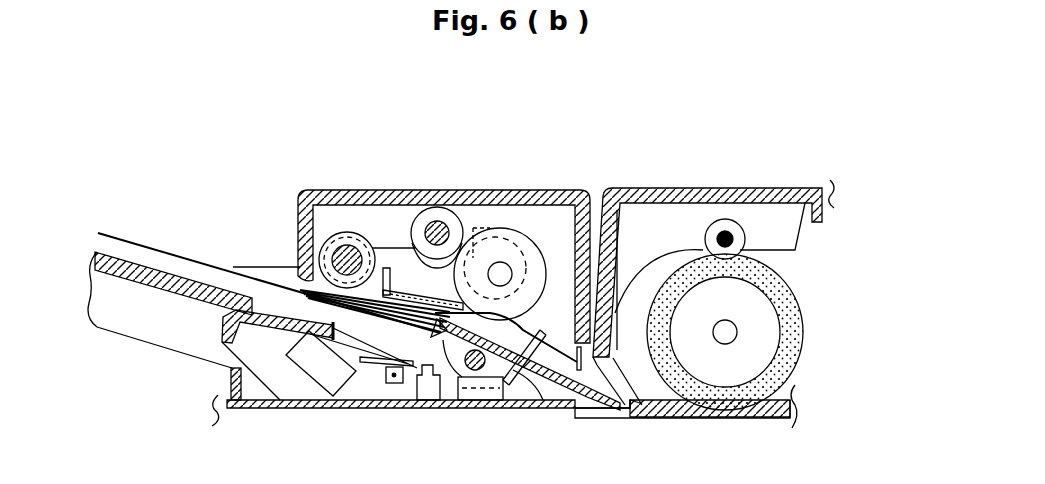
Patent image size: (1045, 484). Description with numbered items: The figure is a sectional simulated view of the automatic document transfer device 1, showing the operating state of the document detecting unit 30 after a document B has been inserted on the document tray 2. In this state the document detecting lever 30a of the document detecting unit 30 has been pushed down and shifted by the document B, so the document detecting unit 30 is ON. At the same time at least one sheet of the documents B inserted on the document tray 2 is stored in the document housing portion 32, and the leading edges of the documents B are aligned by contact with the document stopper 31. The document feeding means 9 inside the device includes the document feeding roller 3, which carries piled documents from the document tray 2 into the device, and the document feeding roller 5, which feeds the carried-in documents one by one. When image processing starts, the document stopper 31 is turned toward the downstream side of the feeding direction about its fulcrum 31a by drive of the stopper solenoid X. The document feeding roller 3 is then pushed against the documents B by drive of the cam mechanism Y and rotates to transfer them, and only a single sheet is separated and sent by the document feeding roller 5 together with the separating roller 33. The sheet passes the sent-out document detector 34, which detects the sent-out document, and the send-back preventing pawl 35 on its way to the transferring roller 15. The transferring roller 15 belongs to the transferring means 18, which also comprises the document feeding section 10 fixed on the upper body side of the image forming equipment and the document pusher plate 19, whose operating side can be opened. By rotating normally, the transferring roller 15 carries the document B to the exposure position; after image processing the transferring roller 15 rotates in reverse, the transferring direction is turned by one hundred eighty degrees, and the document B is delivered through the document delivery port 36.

The automatic document transfer device 1 is at (678, 168).
The document tray 2 is at (142, 267).
The document feeding roller 3 is at (345, 232).
The document feeding roller 5 is at (510, 228).
The document feeding means 9 is at (395, 215).
The document feeding section 10 is at (318, 168).
The transferring roller 15 is at (800, 327).
The transferring means 18 is at (655, 228).
The document pusher plate 19 is at (727, 187).
The document detecting unit 30 is at (318, 368).
The document detecting lever 30a is at (360, 410).
The document stopper 31 is at (433, 410).
The fulcrum 31a is at (397, 410).
The document housing portion 32 is at (470, 410).
The separating roller 33 is at (517, 410).
The sent-out document detector 34 is at (548, 410).
The send-back preventing pawl 35 is at (630, 410).
The document delivery port 36 is at (808, 243).
The document B is at (210, 275).
The stopper solenoid X is at (438, 410).
The cam mechanism Y is at (440, 208).